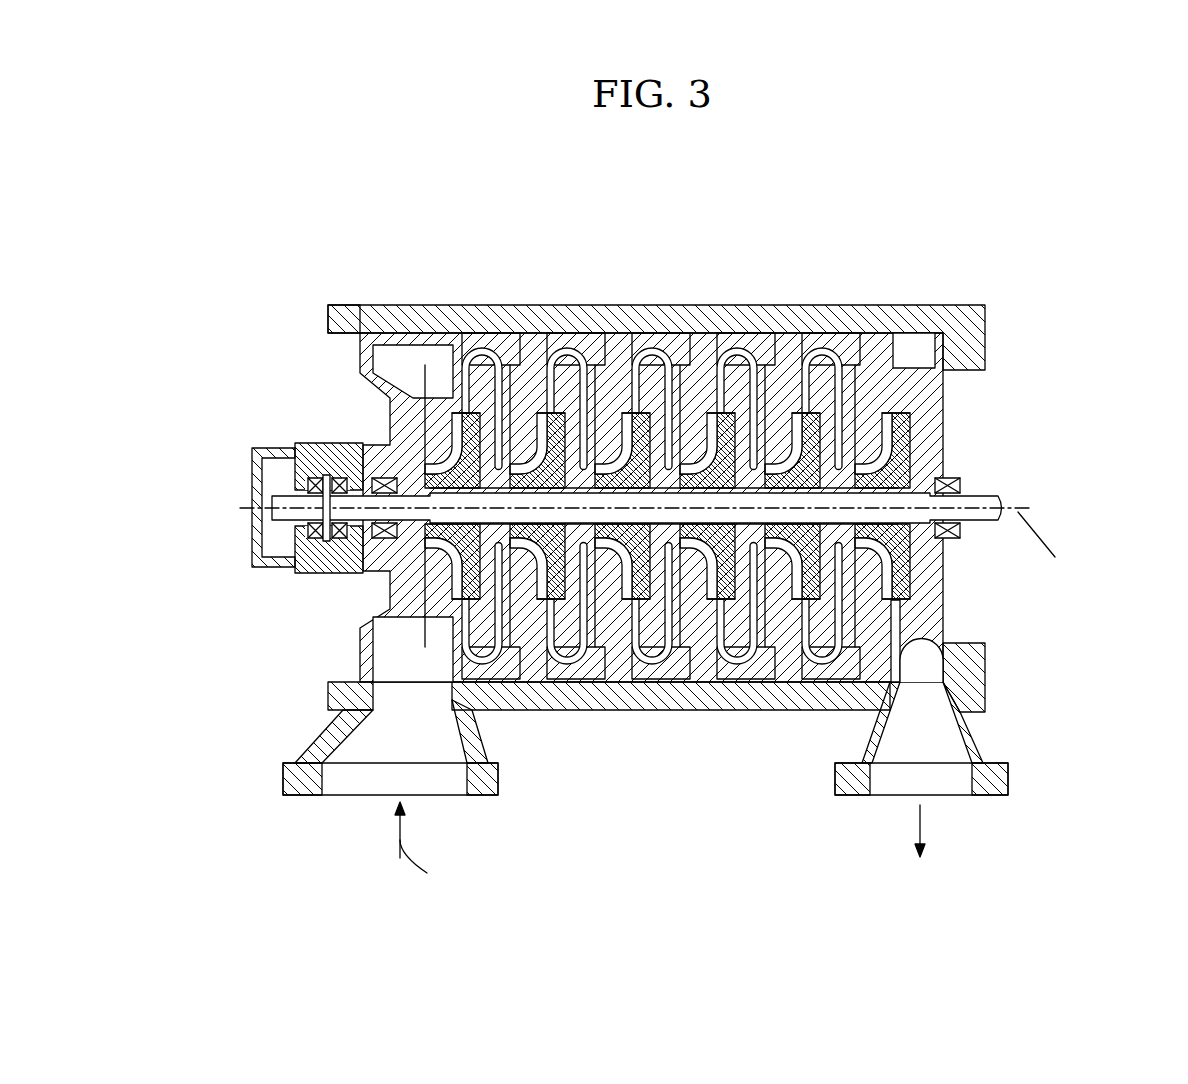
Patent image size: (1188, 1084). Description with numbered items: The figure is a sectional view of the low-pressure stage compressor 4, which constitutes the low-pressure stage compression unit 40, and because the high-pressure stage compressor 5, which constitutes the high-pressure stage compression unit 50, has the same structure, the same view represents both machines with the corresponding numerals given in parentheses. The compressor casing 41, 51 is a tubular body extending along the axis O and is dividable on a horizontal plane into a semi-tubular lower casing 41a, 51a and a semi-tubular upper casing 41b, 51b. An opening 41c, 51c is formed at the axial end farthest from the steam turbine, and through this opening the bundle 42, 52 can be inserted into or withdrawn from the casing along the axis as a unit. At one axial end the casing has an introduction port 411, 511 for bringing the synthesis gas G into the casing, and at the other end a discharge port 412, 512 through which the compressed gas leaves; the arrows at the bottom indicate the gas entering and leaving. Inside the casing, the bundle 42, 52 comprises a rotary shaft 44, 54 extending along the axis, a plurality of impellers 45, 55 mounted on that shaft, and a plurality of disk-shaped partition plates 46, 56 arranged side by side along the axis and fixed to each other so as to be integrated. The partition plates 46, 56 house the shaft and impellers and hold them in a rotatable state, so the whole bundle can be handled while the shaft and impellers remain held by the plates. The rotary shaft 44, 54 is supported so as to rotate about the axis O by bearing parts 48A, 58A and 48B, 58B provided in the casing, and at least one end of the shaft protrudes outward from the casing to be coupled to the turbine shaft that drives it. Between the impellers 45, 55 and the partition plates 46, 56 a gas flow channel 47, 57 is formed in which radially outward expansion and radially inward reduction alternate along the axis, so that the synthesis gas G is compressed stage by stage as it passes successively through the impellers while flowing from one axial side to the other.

The low-pressure stage compressor 4 is at (652, 509).
The low-pressure stage compression unit 40 is at (652, 509).
The high-pressure stage compressor 5 is at (652, 509).
The high-pressure stage compression unit 50 is at (790, 232).
The compressor casing 41 is at (681, 554).
The compressor casing 51 is at (938, 304).
The lower casing 41a is at (736, 677).
The lower casing 51a is at (973, 657).
The upper casing 41b is at (729, 335).
The upper casing 51b is at (975, 352).
The opening 41c is at (289, 273).
The opening 51c is at (342, 337).
The introduction port 411 is at (379, 805).
The introduction port 511 is at (322, 781).
The discharge port 412 is at (960, 793).
The discharge port 512 is at (972, 780).
The bundle 42 is at (551, 515).
The bundle 52 is at (358, 656).
The rotary shaft 44 is at (635, 669).
The rotary shaft 54 is at (666, 516).
The impellers 45 is at (696, 512).
The impellers 55 is at (738, 372).
The partition plates 46 is at (667, 535).
The partition plates 56 is at (505, 347).
The gas flow channel 47 is at (664, 691).
The gas flow channel 57 is at (652, 664).
The bearing part 48A is at (298, 534).
The bearing part 58A is at (387, 575).
The bearing part 48B is at (1036, 453).
The bearing part 58B is at (952, 478).